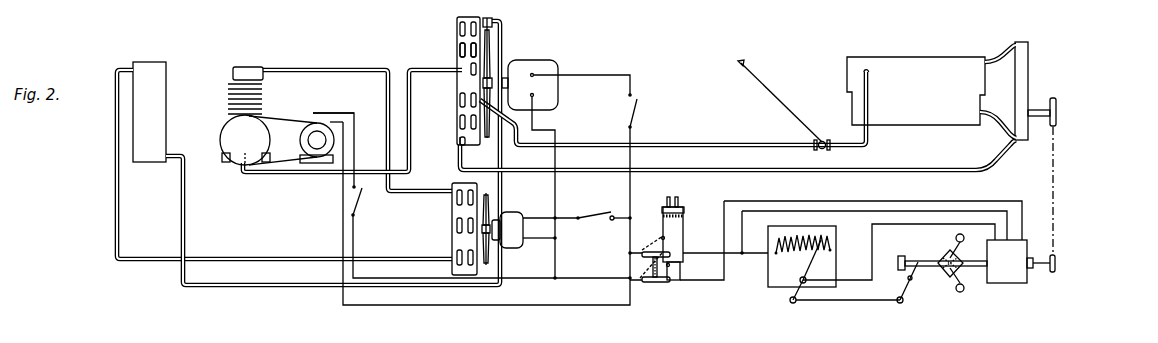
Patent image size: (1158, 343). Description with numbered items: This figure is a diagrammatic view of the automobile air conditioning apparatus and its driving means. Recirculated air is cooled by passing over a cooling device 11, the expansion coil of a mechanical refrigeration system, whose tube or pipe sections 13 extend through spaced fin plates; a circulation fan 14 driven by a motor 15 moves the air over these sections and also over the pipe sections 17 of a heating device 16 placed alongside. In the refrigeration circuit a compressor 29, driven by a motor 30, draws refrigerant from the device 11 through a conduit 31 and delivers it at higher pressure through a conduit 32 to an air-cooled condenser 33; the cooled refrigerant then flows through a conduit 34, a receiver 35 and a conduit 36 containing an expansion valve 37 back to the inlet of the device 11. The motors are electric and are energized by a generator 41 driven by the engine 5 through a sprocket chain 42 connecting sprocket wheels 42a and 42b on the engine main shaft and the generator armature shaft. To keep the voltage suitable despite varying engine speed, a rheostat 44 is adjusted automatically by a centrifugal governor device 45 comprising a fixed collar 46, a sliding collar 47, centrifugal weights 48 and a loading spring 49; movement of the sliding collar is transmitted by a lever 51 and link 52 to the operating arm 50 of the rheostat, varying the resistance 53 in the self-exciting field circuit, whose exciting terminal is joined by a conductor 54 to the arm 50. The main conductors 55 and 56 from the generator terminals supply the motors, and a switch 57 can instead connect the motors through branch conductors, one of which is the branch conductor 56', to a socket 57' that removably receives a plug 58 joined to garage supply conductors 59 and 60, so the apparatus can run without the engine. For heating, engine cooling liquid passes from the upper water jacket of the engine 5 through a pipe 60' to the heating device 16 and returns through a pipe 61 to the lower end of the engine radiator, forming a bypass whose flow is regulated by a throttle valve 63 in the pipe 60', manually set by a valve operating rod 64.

The engine 5 is at (948, 91).
The cooling device 11 is at (461, 23).
The tube or pipe sections 13 is at (459, 48).
The circulation fan 14 is at (490, 42).
The driving motor 15 is at (560, 95).
The heating device 16 is at (459, 139).
The pipe sections 17 is at (460, 104).
The compressor 29 is at (229, 88).
The motor 30 is at (310, 124).
The conduit 31 is at (283, 176).
The conduit 32 is at (360, 69).
The condenser 33 is at (451, 213).
The conduit 34 is at (315, 250).
The receiver 35 is at (165, 122).
The conduit 36 is at (185, 223).
The expansion valve 37 is at (492, 19).
The electric generator 41 is at (1010, 278).
The sprocket chain 42 is at (1058, 193).
The sprocket wheel 42a is at (1058, 110).
The sprocket wheel 42b is at (1057, 263).
The rheostat 44 is at (773, 282).
The speed-responsive device 45 is at (945, 270).
The collar 46 is at (975, 268).
The collar 47 is at (930, 248).
The centrifugal weights 48 is at (958, 292).
The loading spring 49 is at (961, 233).
The operating arm 50 is at (803, 253).
The lever 51 is at (854, 282).
The link 52 is at (835, 301).
The rheostat resistance 53 is at (803, 232).
The conductor 54 is at (871, 232).
The conductor 55 is at (755, 216).
The conductor 56 is at (873, 211).
The branch conductor 56' is at (702, 240).
The switch 57 is at (650, 280).
The socket 57' is at (725, 226).
The plug or connector 58 is at (666, 206).
The supply conductor 59 is at (670, 196).
The supply conductor 60 is at (693, 192).
The pipe 60' is at (674, 107).
The pipe 61 is at (903, 170).
The throttle valve 63 is at (815, 145).
The valve operating rod 64 is at (772, 86).